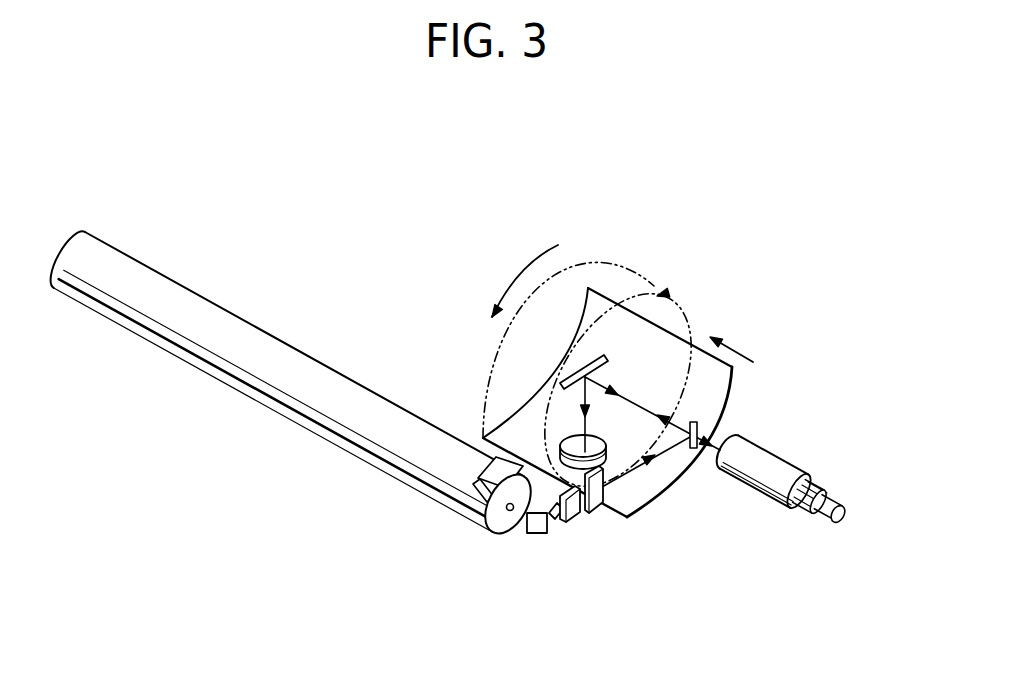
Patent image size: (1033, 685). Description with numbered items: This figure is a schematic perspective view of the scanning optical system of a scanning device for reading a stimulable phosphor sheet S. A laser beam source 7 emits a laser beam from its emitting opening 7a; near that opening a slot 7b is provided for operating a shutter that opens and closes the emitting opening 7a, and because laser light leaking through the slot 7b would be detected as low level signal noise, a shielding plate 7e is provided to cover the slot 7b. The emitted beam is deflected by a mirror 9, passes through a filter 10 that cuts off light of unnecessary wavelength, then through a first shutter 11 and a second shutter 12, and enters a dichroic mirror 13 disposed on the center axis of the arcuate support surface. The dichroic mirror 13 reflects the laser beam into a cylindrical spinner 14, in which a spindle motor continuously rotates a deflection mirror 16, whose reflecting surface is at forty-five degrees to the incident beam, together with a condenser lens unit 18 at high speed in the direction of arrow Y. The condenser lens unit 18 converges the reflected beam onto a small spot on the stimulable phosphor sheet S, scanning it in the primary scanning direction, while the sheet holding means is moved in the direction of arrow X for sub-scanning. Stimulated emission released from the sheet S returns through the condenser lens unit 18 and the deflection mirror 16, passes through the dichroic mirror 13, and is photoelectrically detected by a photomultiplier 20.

The laser beam source 7 is at (307, 408).
The emitting opening 7a is at (509, 511).
The slot 7b is at (470, 508).
The shielding plate 7e is at (475, 481).
The mirror 9 is at (537, 534).
The filter 10 is at (557, 522).
The first shutter 11 is at (578, 520).
The second shutter 12 is at (600, 507).
The dichroic mirror 13 is at (694, 448).
The cylindrical spinner 14 is at (624, 268).
The deflection mirror 16 is at (594, 345).
The condenser lens unit 18 is at (574, 441).
The photomultiplier 20 is at (783, 468).
The stimulable phosphor sheet S is at (710, 392).
The arrow X is at (737, 344).
The arrow Y is at (525, 279).